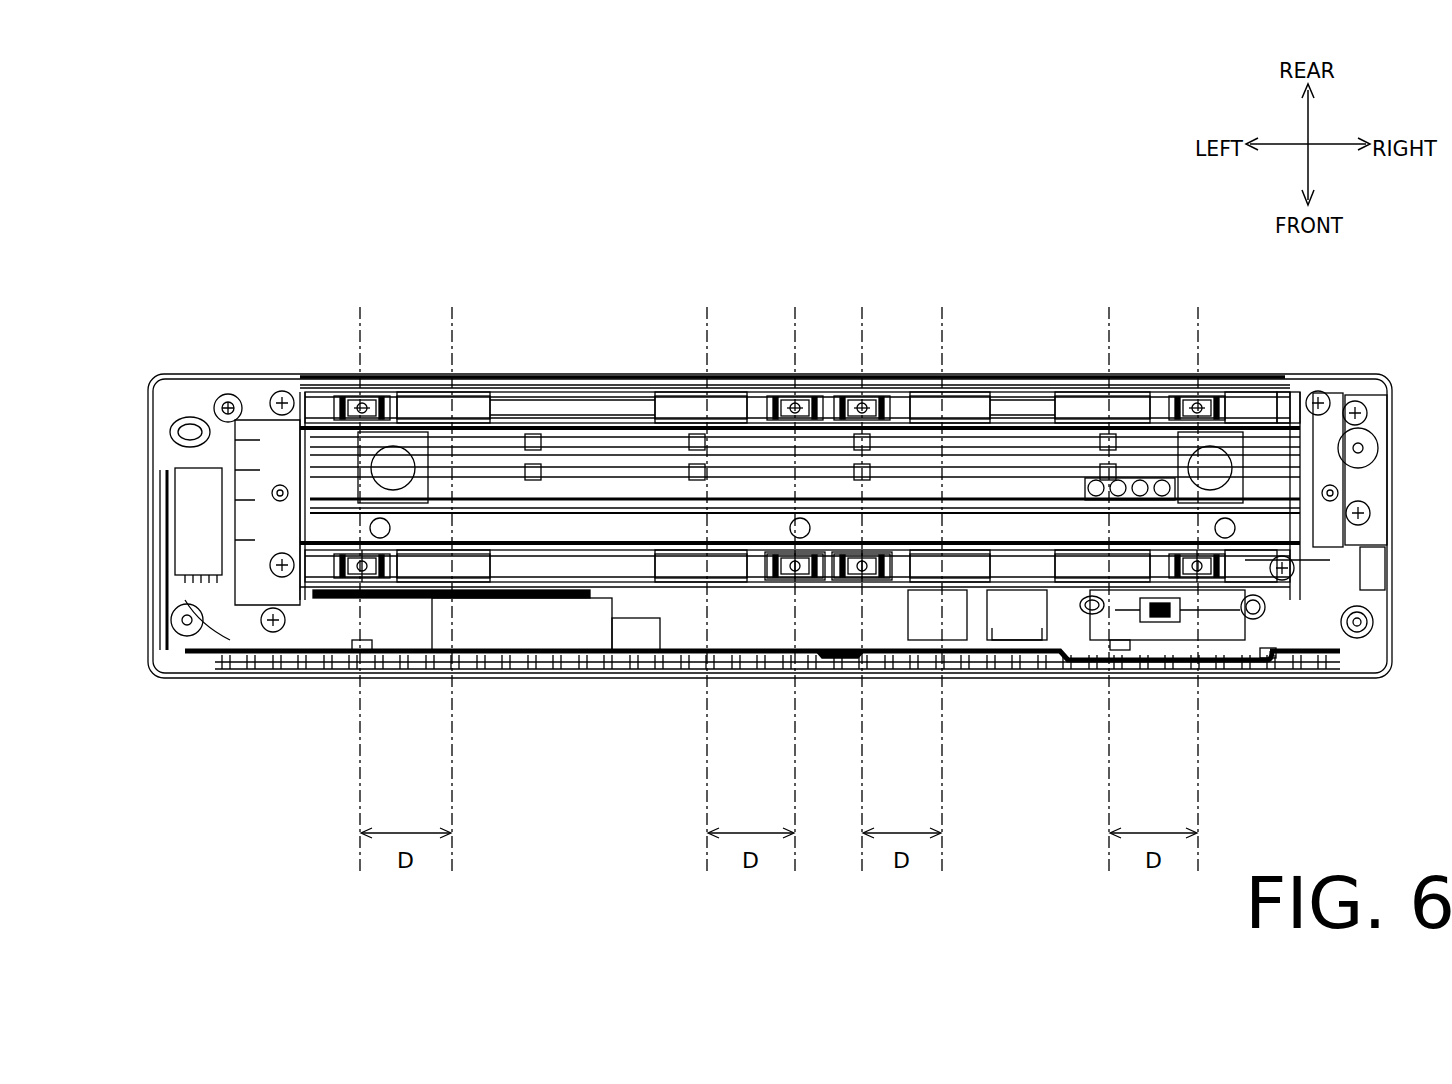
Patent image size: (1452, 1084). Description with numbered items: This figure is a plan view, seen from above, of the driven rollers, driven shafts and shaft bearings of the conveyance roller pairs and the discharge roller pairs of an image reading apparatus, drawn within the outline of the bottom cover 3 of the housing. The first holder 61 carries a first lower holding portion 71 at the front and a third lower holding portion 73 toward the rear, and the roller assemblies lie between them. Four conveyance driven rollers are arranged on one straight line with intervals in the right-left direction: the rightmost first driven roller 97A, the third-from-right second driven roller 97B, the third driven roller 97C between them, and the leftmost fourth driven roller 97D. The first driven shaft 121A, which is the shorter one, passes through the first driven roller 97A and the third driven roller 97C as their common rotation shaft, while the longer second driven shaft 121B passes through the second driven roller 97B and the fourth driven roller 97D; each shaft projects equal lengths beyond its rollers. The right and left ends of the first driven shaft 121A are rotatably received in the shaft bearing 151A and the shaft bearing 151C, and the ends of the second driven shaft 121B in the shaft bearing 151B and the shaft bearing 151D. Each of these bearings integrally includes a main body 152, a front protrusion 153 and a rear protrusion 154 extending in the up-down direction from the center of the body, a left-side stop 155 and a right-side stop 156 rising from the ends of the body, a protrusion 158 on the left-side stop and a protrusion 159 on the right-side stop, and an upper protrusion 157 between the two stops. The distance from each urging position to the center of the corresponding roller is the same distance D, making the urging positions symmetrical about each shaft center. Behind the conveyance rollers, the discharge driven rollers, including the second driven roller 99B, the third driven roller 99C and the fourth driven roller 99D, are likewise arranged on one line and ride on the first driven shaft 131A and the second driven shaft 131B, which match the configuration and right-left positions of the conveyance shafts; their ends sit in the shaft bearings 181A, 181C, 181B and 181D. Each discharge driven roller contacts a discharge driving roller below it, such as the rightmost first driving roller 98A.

The bottom cover 3 is at (150, 606).
The first holder 61 is at (1278, 400).
The first lower holding portion 71 is at (1365, 676).
The third lower holding portion 73 is at (1288, 410).
The first driven roller 97A is at (1115, 642).
The second driven roller 97B is at (660, 600).
The third driven roller 97C is at (960, 600).
The fourth driven roller 97D is at (470, 600).
The first driving roller 98A is at (1092, 402).
The second driven roller 99B is at (700, 402).
The third driven roller 99C is at (970, 402).
The fourth driven roller 99D is at (473, 408).
The first driven shaft 121A is at (1035, 642).
The second driven shaft 121B is at (598, 605).
The first driven shaft 131A is at (1020, 402).
The second driven shaft 131B is at (560, 400).
The shaft bearing 151A is at (1250, 562).
The shaft bearing 151B is at (804, 538).
The shaft bearing 151C is at (854, 538).
The shaft bearing 151D is at (187, 640).
The main body 152 is at (340, 580).
The front protrusion 153 is at (383, 580).
The rear protrusion 154 is at (878, 540).
The left-side stop 155 is at (350, 578).
The right-side stop 156 is at (405, 648).
The upper protrusion 157 is at (350, 578).
The protrusion 158 is at (345, 580).
The protrusion 159 is at (370, 572).
The shaft bearing 181A is at (1180, 398).
The shaft bearing 181B is at (775, 398).
The shaft bearing 181C is at (848, 398).
The shaft bearing 181D is at (342, 400).